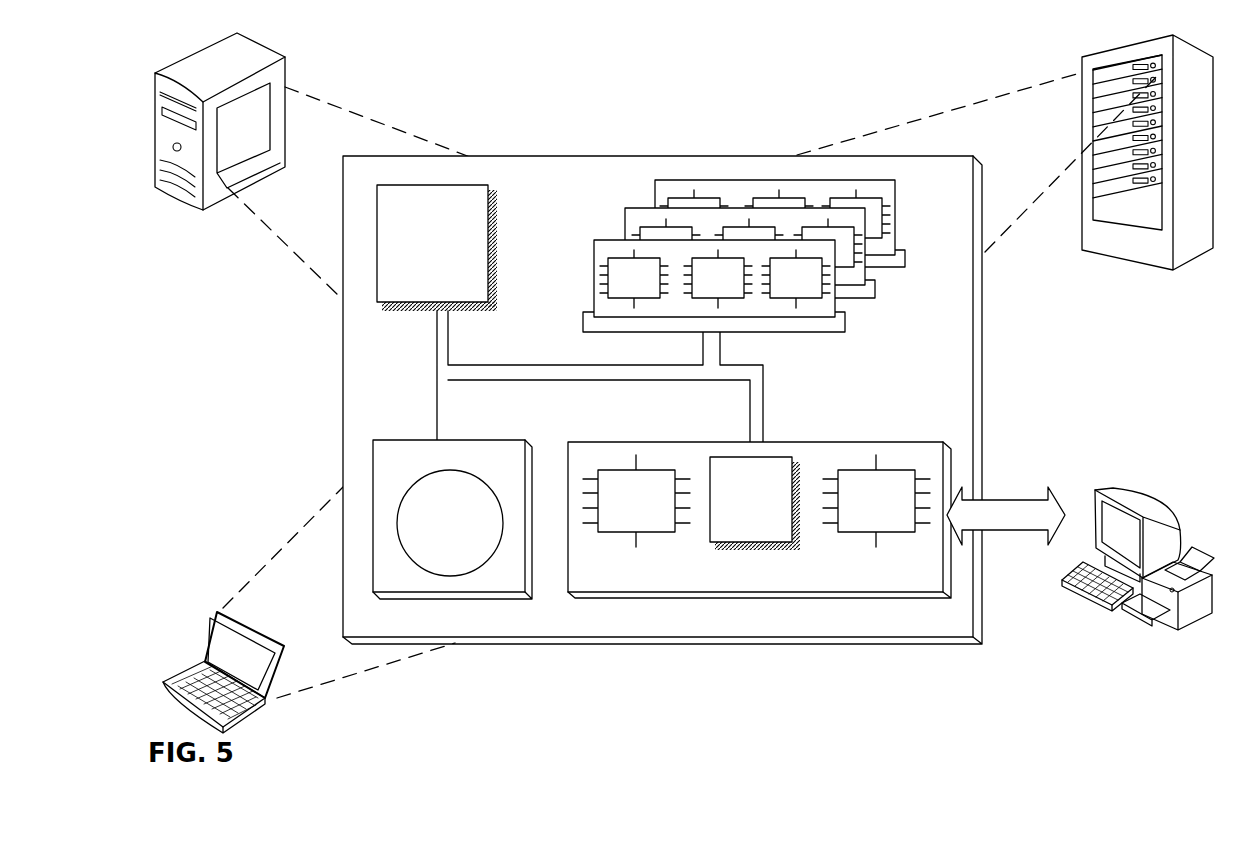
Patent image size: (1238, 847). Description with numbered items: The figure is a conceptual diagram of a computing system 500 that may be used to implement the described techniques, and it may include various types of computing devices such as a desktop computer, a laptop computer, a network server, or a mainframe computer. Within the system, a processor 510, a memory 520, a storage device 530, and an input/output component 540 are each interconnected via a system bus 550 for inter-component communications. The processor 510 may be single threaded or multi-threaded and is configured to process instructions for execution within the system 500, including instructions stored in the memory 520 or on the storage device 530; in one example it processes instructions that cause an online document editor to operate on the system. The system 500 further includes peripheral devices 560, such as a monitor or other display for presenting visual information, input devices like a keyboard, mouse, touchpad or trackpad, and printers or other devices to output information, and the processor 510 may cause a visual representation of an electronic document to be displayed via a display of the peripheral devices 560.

The computing system 500 is at (476, 36).
The processor 510 is at (437, 248).
The memory 520 is at (898, 301).
The storage device 530 is at (452, 519).
The input/output component 540 is at (759, 520).
The system bus 550 is at (598, 382).
The peripheral devices 560 is at (1095, 492).